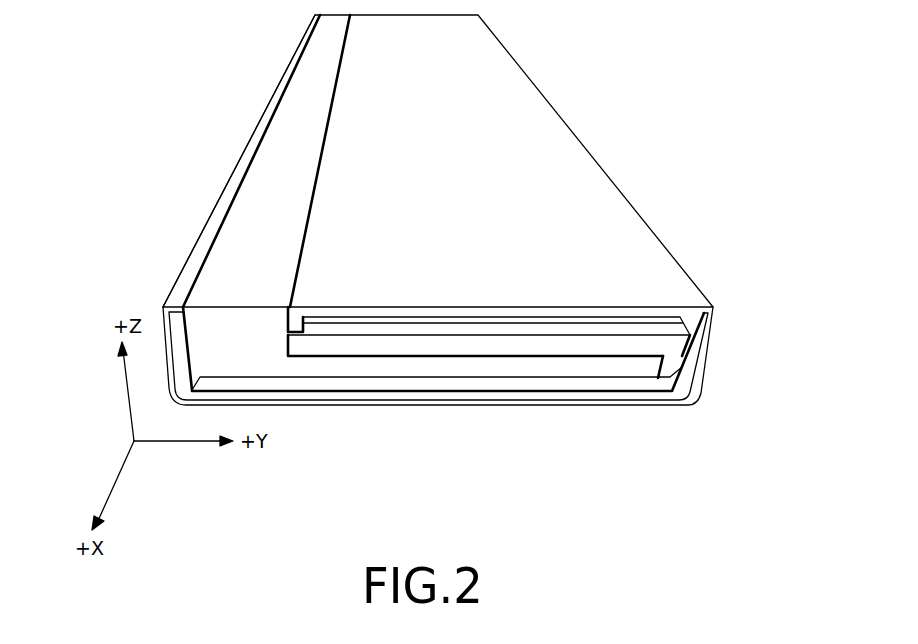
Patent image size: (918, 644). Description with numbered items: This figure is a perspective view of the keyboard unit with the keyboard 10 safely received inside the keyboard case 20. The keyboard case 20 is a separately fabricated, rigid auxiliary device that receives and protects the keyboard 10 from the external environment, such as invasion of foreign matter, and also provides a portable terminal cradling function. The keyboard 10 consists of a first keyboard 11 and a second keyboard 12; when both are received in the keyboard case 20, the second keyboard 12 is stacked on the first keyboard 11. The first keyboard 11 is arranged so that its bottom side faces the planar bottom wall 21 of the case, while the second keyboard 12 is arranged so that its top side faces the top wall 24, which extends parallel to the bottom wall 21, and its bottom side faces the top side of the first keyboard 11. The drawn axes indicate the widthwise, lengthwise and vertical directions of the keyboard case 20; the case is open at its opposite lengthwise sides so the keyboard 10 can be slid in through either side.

The keyboard 10 is at (683, 360).
The first keyboard 11 is at (447, 368).
The second keyboard 12 is at (570, 347).
The keyboard case 20 is at (553, 106).
The bottom wall 21 is at (325, 403).
The top wall 24 is at (630, 310).